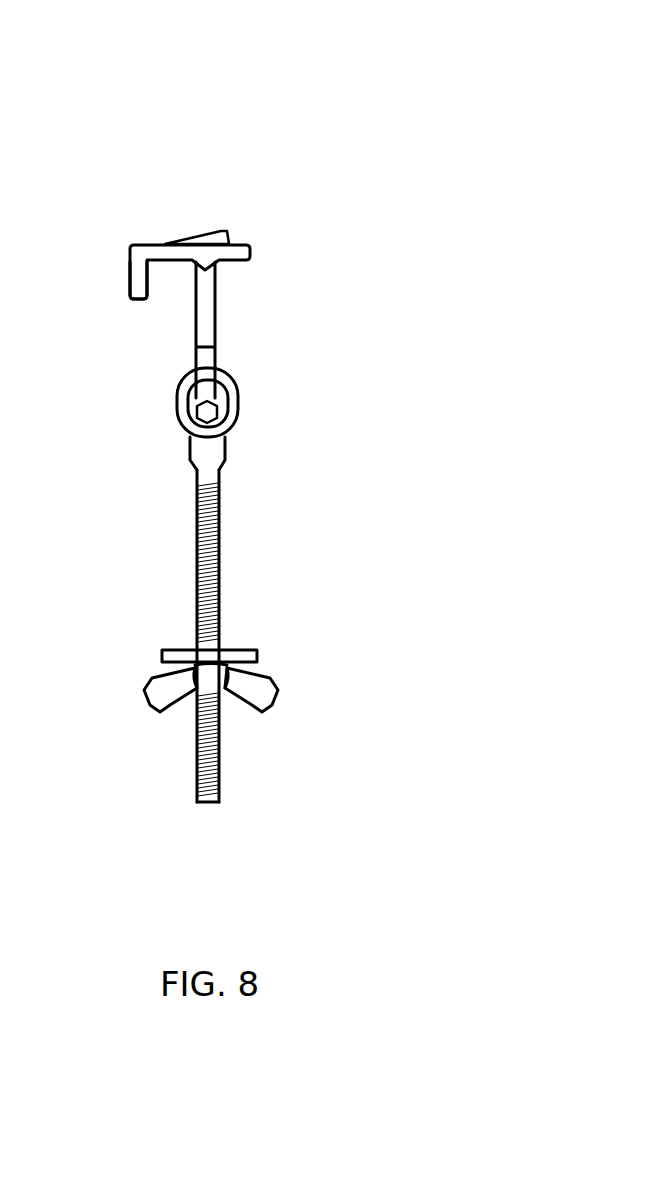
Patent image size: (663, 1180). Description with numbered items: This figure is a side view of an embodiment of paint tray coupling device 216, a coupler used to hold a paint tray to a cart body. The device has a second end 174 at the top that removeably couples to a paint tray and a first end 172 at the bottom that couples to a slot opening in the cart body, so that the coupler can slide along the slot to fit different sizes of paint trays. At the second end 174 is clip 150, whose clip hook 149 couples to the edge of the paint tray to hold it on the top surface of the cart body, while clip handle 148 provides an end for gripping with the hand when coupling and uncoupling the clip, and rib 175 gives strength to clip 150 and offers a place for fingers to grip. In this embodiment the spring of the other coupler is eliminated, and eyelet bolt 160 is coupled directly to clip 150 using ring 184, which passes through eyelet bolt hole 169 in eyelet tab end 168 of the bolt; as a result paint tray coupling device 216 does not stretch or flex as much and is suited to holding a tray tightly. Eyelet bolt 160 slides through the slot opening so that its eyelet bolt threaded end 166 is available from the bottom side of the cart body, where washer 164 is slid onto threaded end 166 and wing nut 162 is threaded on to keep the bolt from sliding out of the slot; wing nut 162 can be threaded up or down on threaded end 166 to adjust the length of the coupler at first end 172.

The paint tray coupling device 216 is at (270, 103).
The second end 174 is at (374, 251).
The clip handle 148 is at (241, 242).
The clip hook 149 is at (138, 278).
The rib 175 is at (202, 239).
The clip 150 is at (215, 312).
The ring 184 is at (228, 375).
The eyelet tab end 168 is at (211, 412).
The eyelet bolt hole 169 is at (197, 440).
The eyelet bolt 160 is at (150, 574).
The first end 172 is at (383, 700).
The washer 164 is at (243, 650).
The wing nut 162 is at (264, 695).
The eyelet bolt threaded end 166 is at (210, 787).